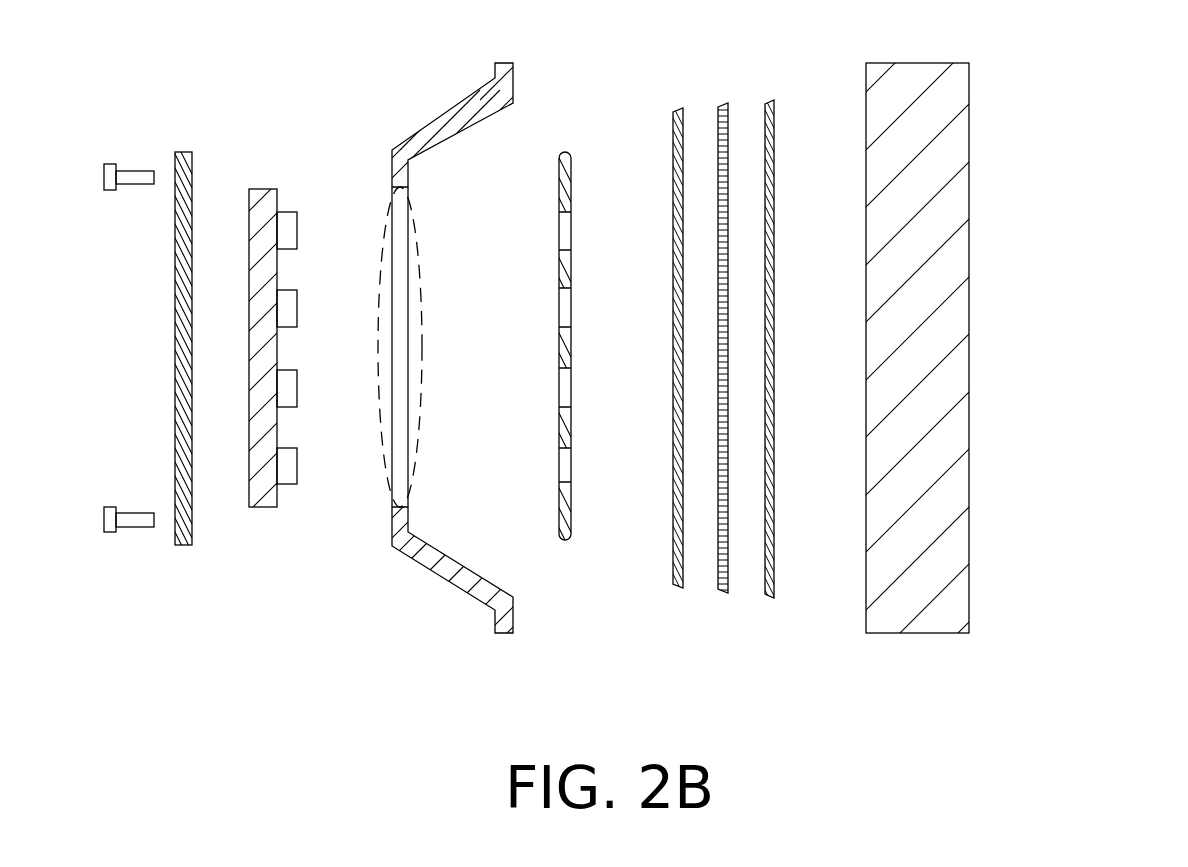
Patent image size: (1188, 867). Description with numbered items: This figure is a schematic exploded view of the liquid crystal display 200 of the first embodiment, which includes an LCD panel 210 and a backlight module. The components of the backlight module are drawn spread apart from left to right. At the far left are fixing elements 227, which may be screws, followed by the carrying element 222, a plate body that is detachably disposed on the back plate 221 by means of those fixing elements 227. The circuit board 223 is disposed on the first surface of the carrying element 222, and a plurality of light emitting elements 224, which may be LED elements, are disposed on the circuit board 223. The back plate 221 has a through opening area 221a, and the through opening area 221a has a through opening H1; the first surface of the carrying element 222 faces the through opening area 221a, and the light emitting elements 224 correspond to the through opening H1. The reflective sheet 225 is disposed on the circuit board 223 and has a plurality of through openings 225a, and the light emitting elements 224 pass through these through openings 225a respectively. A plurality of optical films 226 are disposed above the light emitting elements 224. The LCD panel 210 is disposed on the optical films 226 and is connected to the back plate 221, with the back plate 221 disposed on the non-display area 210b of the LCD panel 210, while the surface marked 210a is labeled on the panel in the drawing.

The liquid crystal display 200 is at (1088, 680).
The LCD panel 210 is at (958, 122).
The light incident surface 210a is at (970, 196).
The non-display area 210b is at (866, 592).
The back plate 221 is at (445, 122).
The through opening area 221a is at (395, 215).
The carrying element 222 is at (188, 158).
The circuit board 223 is at (270, 490).
The light emitting element 224 is at (293, 468).
The reflective sheet 225 is at (563, 545).
The through opening 225a is at (569, 470).
The optical films 226 is at (770, 100).
The fixing element 227 is at (104, 178).
The through opening H1 is at (412, 496).